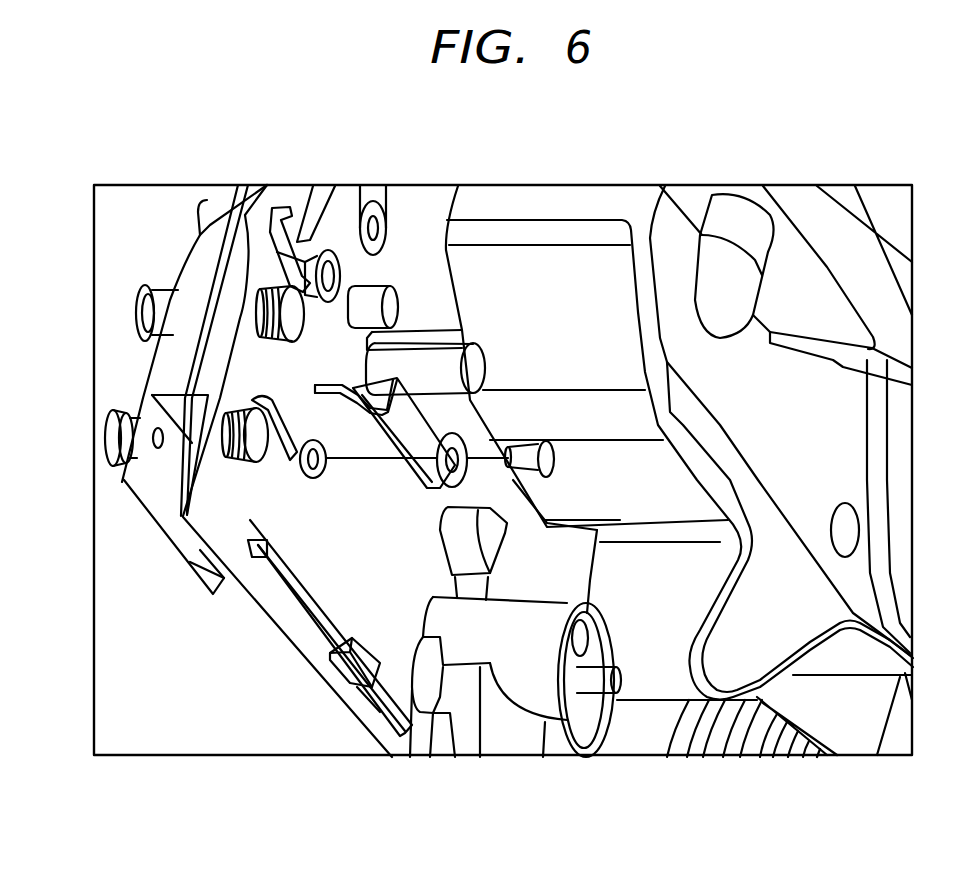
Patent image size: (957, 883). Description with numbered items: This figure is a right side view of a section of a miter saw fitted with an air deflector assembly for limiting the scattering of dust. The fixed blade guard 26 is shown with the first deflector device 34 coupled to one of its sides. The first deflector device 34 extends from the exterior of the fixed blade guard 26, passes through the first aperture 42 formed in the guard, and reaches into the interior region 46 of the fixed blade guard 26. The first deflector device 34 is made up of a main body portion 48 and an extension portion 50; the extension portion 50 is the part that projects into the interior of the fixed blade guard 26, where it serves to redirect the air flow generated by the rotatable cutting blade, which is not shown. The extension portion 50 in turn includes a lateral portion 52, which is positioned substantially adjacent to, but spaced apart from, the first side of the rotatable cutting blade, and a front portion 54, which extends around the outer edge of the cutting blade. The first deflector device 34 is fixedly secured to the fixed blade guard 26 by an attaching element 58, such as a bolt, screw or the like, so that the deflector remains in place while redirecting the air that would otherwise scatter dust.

The fixed blade guard 26 is at (200, 545).
The first deflector device 34 is at (392, 480).
The first aperture 42 is at (278, 453).
The interior region 46 is at (160, 477).
The main body portion 48 is at (412, 418).
The extension portion 50 is at (360, 410).
The lateral portion 52 is at (380, 430).
The front portion 54 is at (318, 386).
The attaching element 58 is at (555, 458).